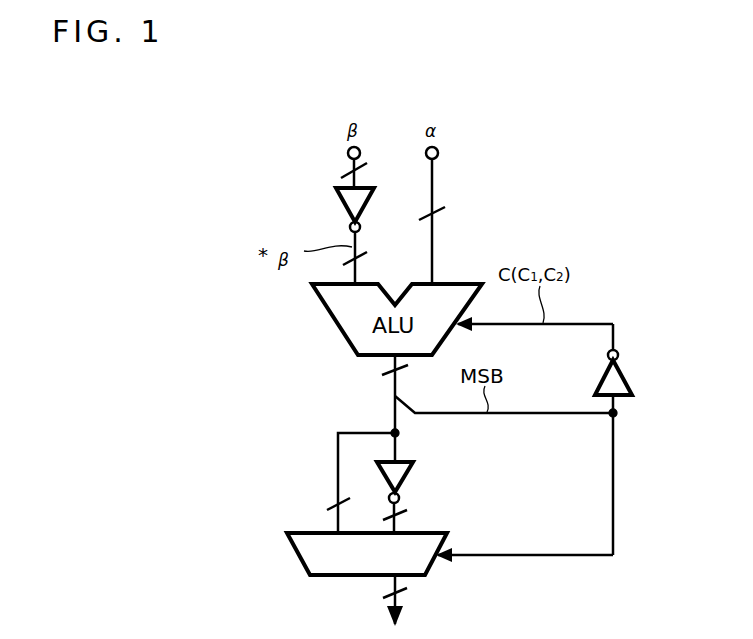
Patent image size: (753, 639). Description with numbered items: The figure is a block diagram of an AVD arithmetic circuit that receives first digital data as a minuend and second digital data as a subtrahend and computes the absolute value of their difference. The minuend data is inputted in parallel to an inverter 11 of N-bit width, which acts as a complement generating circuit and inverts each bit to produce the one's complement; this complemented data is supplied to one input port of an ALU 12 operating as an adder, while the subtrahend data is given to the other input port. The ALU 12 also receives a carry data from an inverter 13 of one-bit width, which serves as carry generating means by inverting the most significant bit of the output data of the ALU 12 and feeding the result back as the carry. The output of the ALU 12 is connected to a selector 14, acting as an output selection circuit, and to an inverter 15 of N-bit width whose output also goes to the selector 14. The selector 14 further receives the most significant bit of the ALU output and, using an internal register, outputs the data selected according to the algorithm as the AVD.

The inverter 11 is at (343, 193).
The ALU 12 is at (460, 283).
The inverter 13 is at (625, 370).
The selector 14 is at (430, 533).
The inverter 15 is at (410, 472).